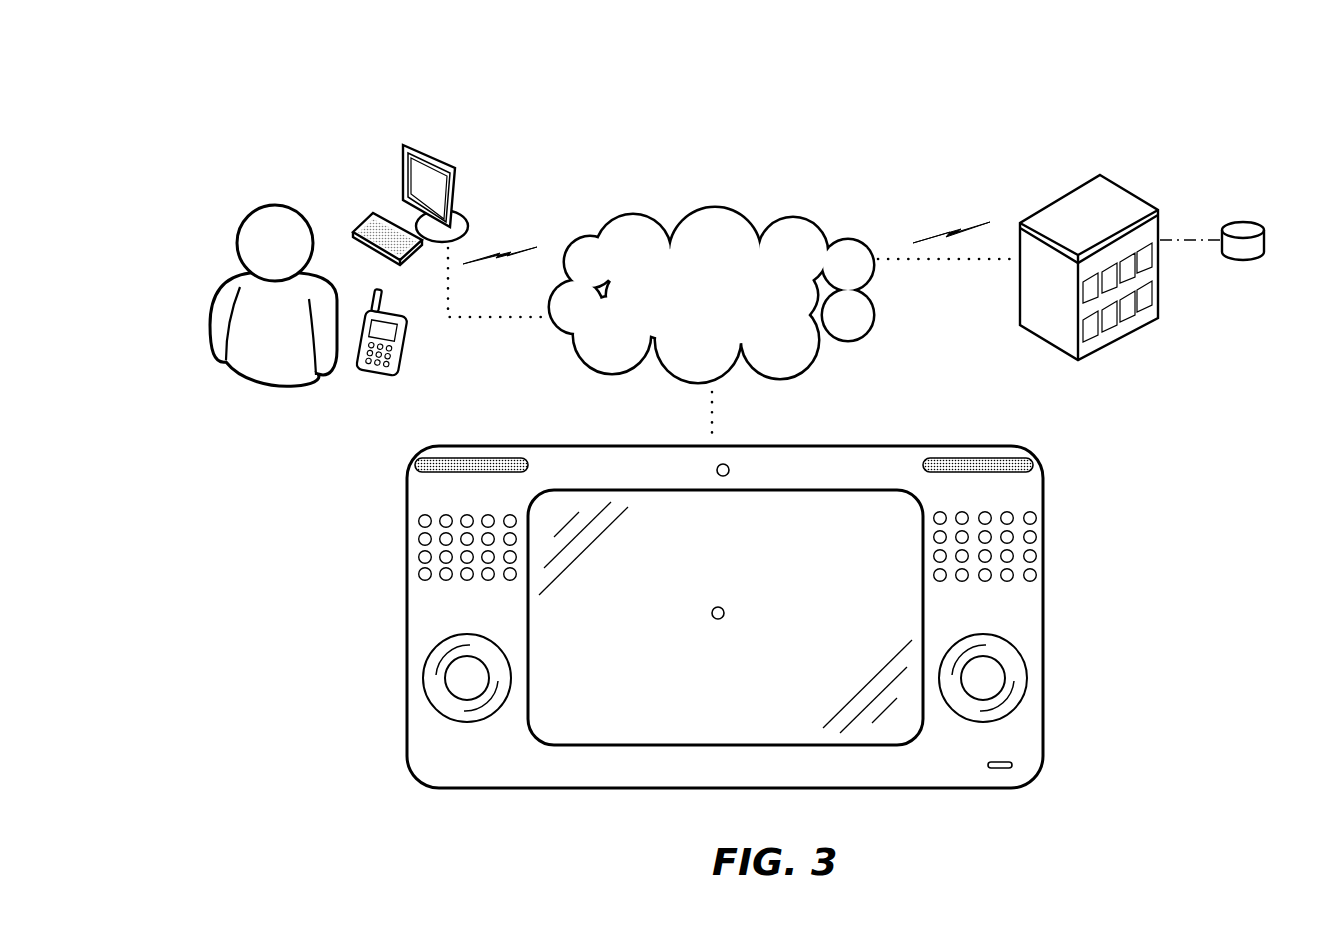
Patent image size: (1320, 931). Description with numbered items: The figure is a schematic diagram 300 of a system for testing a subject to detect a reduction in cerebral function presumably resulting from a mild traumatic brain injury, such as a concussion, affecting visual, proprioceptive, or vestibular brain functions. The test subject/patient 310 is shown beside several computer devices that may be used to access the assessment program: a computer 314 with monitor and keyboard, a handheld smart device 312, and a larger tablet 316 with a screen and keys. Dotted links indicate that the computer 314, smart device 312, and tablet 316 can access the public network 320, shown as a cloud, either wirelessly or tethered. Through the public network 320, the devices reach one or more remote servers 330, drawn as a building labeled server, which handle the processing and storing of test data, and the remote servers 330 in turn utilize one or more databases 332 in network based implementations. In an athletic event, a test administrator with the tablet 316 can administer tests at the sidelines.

The schematic diagram 300 is at (291, 124).
The test subject/patient 310 is at (229, 275).
The smart device 312 is at (402, 318).
The computer 314 is at (472, 222).
The tablet 316 is at (955, 446).
The public network 320 is at (761, 229).
The remote server 330 is at (1020, 223).
The database 332 is at (1264, 226).